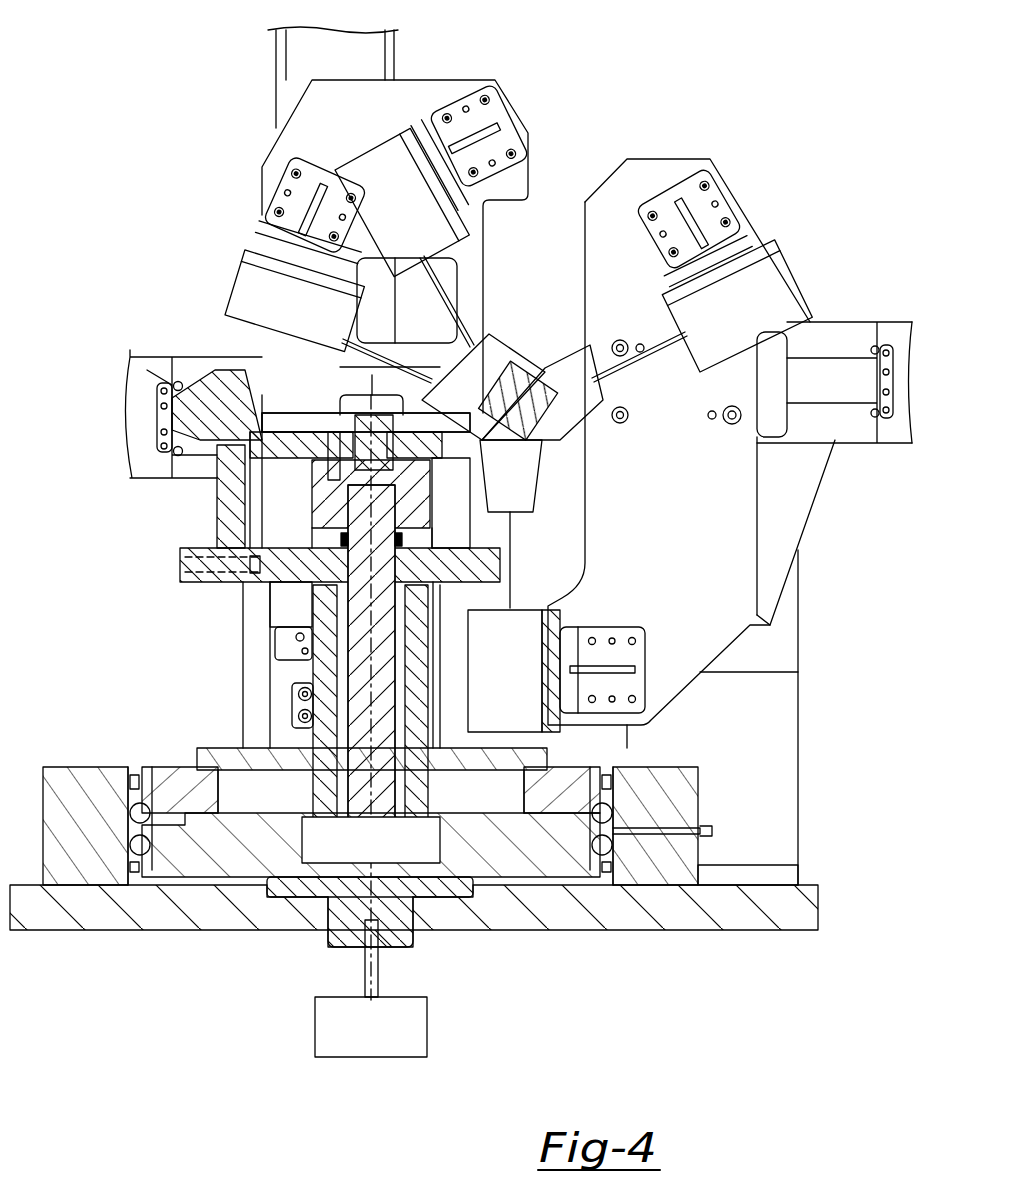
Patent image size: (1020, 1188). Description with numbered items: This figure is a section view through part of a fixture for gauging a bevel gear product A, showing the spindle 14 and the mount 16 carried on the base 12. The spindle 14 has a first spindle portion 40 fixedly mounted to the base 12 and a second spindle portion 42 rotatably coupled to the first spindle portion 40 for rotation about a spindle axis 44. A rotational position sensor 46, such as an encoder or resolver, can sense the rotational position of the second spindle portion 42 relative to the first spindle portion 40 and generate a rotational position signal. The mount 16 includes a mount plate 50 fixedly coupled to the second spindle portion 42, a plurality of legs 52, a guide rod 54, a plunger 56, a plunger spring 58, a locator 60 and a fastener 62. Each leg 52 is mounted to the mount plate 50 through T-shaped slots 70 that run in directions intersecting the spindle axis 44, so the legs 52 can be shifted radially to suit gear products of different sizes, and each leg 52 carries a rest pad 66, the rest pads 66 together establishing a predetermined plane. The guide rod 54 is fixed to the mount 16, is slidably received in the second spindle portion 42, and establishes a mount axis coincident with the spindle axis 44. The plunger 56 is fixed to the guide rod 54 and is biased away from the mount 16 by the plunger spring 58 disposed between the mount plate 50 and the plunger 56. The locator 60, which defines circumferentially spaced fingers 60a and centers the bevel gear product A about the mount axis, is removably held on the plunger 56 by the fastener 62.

The bevel gear product A is at (205, 392).
The base 12 is at (762, 893).
The spindle 14 is at (278, 692).
The mount 16 is at (192, 537).
The first spindle portion 40 is at (682, 783).
The second spindle portion 42 is at (317, 703).
The spindle axis 44 is at (370, 892).
The rotational position sensor 46 is at (315, 1025).
The mount plate 50 is at (410, 567).
The legs 52 is at (220, 488).
The guide rod 54 is at (380, 630).
The plunger 56 is at (420, 473).
The plunger spring 58 is at (398, 542).
The locator 60 is at (297, 443).
The fingers 60a is at (366, 422).
The fastener 62 is at (350, 395).
The rest pad 66 is at (185, 450).
The T-shaped slots 70 is at (253, 563).